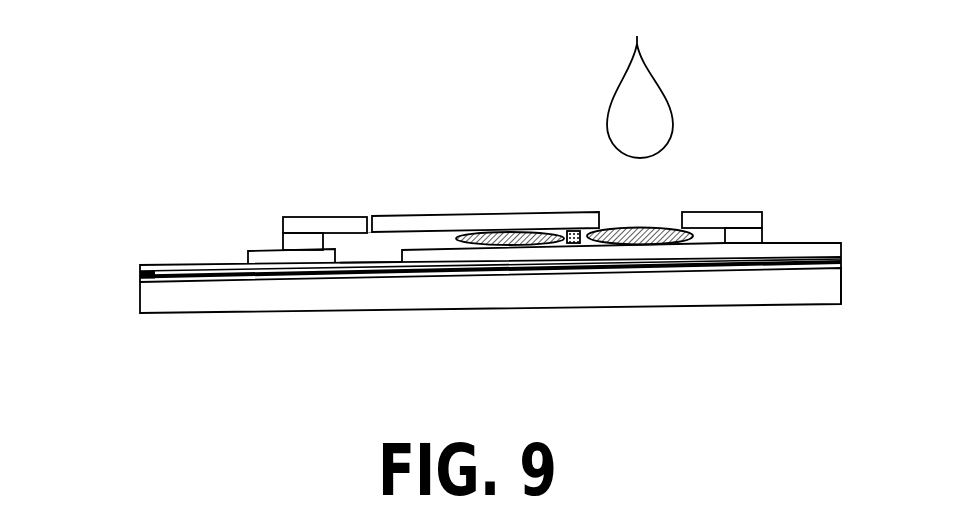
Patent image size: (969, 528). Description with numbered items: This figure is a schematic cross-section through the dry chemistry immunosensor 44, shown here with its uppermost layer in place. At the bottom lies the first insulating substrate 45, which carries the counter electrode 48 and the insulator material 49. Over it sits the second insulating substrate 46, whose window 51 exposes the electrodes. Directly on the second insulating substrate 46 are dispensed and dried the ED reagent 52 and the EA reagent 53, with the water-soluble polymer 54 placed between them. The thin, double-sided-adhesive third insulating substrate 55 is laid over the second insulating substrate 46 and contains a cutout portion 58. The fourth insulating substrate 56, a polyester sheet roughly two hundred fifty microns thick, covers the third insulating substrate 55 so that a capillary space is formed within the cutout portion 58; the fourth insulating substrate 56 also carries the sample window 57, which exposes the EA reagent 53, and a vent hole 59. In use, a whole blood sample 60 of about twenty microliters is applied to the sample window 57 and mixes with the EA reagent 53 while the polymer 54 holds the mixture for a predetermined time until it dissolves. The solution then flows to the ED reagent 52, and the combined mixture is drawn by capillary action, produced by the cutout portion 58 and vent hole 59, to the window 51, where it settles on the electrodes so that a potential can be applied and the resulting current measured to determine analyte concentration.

The immunosensor 44 is at (152, 222).
The first insulating substrate 45 is at (160, 295).
The second insulating substrate 46 is at (260, 258).
The counter electrode 48 is at (155, 266).
The insulator material 49 is at (140, 276).
The window 51 is at (371, 257).
The ED reagent 52 is at (505, 238).
The EA reagent 53 is at (643, 237).
The polymer 54 is at (575, 243).
The third insulating substrate 55 is at (288, 243).
The fourth insulating substrate 56 is at (307, 225).
The sample window 57 is at (627, 220).
The cutout portion 58 is at (433, 243).
The vent hole 59 is at (368, 226).
The whole blood sample 60 is at (638, 122).